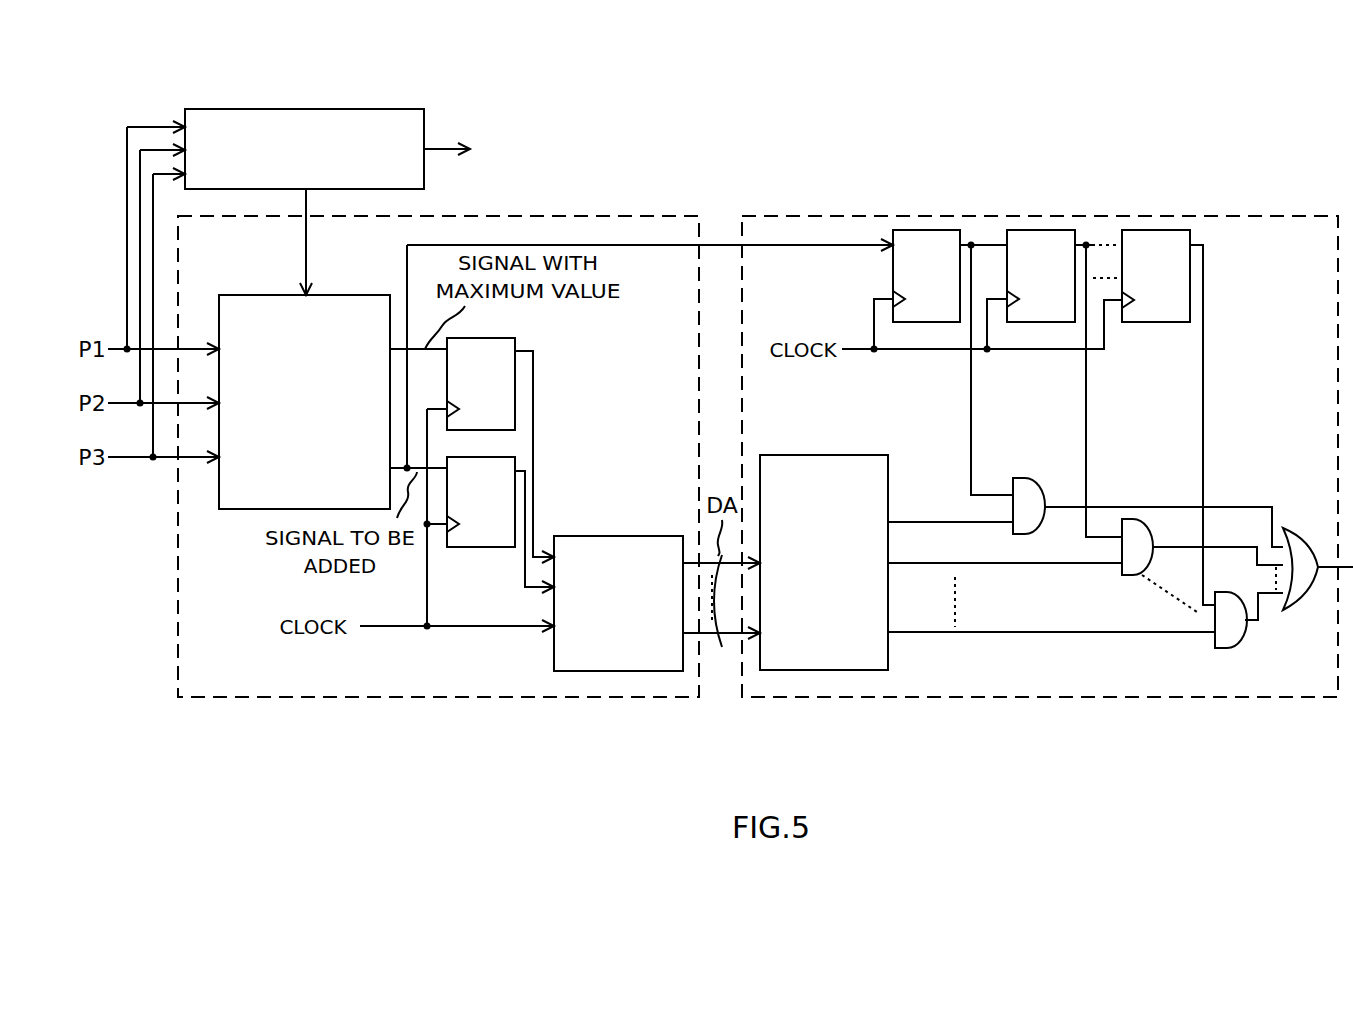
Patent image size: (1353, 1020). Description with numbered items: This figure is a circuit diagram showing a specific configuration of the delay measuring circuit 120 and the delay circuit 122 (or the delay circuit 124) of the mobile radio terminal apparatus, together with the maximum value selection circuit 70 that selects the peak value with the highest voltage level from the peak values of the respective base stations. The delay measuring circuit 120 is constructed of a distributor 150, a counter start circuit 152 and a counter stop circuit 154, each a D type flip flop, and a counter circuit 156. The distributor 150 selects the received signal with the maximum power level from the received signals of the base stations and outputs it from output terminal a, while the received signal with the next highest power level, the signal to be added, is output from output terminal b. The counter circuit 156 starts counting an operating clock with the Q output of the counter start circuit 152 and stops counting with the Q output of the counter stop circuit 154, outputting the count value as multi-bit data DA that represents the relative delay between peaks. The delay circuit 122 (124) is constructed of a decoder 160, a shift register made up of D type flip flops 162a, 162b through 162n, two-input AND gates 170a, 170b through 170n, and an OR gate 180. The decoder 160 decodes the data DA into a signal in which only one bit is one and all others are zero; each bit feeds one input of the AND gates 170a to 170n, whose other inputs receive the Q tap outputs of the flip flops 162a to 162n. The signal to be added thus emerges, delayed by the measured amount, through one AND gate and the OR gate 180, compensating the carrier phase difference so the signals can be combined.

The maximum value selection circuit 70 is at (425, 114).
The delay measuring circuit 120 is at (598, 216).
The delay circuit 122 is at (1040, 428).
The delay circuit 124 is at (1080, 216).
The distributor 150 is at (350, 295).
The counter start circuit 152 is at (515, 345).
The counter stop circuit 154 is at (472, 547).
The counter circuit 156 is at (585, 536).
The decoder 160 is at (872, 455).
The D type flip flop 162a is at (942, 322).
The D type flip flop 162b is at (1060, 322).
The D type flip flop 162n is at (1175, 322).
The AND gate 170a is at (1027, 478).
The AND gate 170b is at (1127, 575).
The AND gate 170n is at (1220, 648).
The OR gate 180 is at (1300, 528).